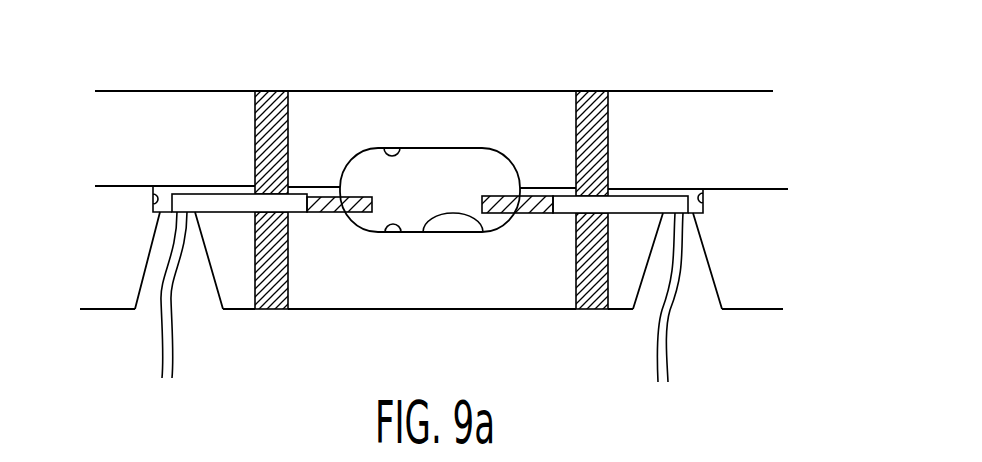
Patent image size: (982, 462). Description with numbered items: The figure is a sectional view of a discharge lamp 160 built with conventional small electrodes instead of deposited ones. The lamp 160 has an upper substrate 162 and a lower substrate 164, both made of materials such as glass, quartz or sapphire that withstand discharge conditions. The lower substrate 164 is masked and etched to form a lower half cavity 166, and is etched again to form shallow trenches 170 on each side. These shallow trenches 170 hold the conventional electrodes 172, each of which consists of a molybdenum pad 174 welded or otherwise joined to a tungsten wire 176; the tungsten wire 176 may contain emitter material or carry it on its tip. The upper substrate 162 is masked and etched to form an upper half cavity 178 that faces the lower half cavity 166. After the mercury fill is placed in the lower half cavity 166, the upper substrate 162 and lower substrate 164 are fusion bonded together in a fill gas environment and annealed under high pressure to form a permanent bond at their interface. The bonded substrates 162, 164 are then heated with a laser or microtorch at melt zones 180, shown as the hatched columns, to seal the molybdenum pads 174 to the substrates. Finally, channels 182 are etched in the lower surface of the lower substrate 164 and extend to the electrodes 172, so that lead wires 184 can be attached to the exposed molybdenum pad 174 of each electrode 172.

The lamp 160 is at (726, 86).
The upper substrate 162 is at (683, 102).
The lower substrate 164 is at (770, 251).
The lower half cavity 166 is at (397, 226).
The shallow trenches 170 is at (152, 205).
The electrodes 172 is at (223, 184).
The molybdenum pad 174 is at (633, 205).
The tungsten wire 176 is at (530, 214).
The upper half cavity 178 is at (398, 150).
The melt zones 180 is at (267, 88).
The channels 182 is at (217, 297).
The lead wires 184 is at (160, 349).